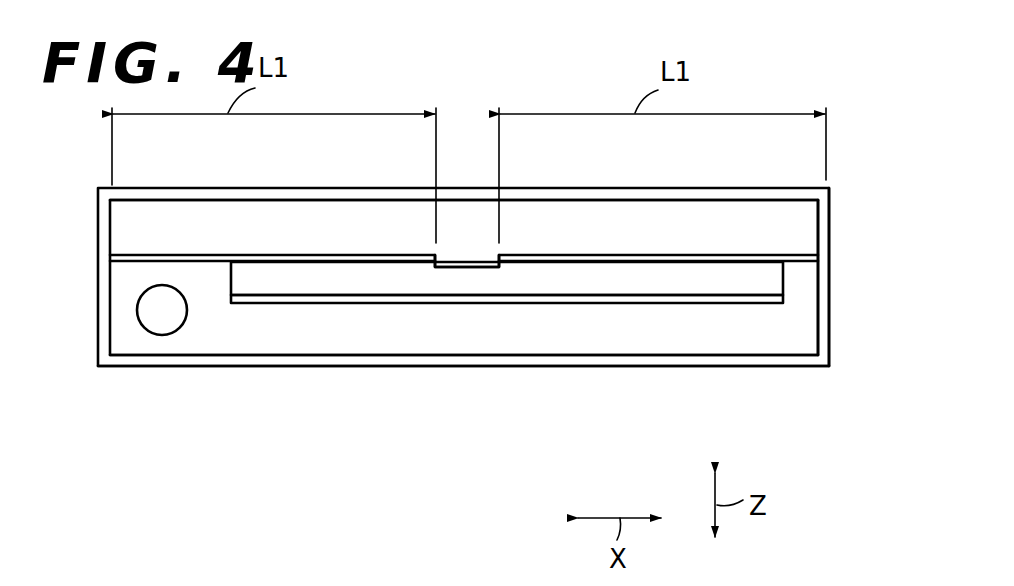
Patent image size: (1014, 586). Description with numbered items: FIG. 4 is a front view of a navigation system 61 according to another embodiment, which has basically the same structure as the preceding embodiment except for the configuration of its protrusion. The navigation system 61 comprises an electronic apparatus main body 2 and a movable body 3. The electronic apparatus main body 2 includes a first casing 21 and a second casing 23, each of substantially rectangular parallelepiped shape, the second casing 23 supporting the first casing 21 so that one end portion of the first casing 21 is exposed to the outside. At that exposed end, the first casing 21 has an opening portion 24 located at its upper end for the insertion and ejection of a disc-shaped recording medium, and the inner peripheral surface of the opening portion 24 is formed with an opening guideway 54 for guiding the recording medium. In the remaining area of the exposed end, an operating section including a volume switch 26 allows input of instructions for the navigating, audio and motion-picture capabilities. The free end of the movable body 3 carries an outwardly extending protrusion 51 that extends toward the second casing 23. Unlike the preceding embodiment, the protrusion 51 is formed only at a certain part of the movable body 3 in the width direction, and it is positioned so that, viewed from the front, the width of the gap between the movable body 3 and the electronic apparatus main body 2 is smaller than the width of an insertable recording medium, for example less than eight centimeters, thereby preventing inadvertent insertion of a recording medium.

The electronic apparatus main body 2 is at (728, 340).
The movable body 3 is at (800, 227).
The first casing 21 is at (656, 347).
The second casing 23 is at (823, 313).
The opening portion 24 is at (545, 287).
The volume switch 26 is at (157, 322).
The protrusion 51 is at (468, 260).
The opening guideway 54 is at (335, 298).
The navigation system 61 is at (474, 72).